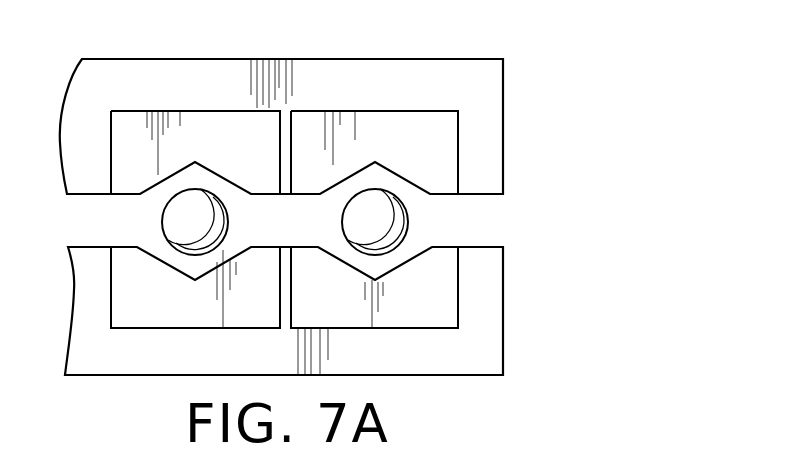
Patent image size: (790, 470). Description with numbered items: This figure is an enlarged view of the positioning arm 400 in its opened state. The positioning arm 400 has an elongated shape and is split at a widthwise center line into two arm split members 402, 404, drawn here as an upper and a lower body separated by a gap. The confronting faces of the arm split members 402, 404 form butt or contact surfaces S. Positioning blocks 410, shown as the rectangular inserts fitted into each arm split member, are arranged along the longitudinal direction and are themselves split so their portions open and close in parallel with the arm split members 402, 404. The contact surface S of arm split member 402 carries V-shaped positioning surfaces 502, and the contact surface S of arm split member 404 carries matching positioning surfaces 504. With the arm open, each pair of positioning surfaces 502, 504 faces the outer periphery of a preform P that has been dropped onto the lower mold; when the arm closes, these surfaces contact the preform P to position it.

The positioning arm 400 is at (363, 213).
The arm split member 402 is at (433, 59).
The arm split member 404 is at (467, 375).
The positioning block 410 is at (180, 125).
The positioning surface 502 is at (412, 184).
The positioning surface 504 is at (400, 253).
The contact surface S is at (485, 195).
The preform P is at (162, 225).